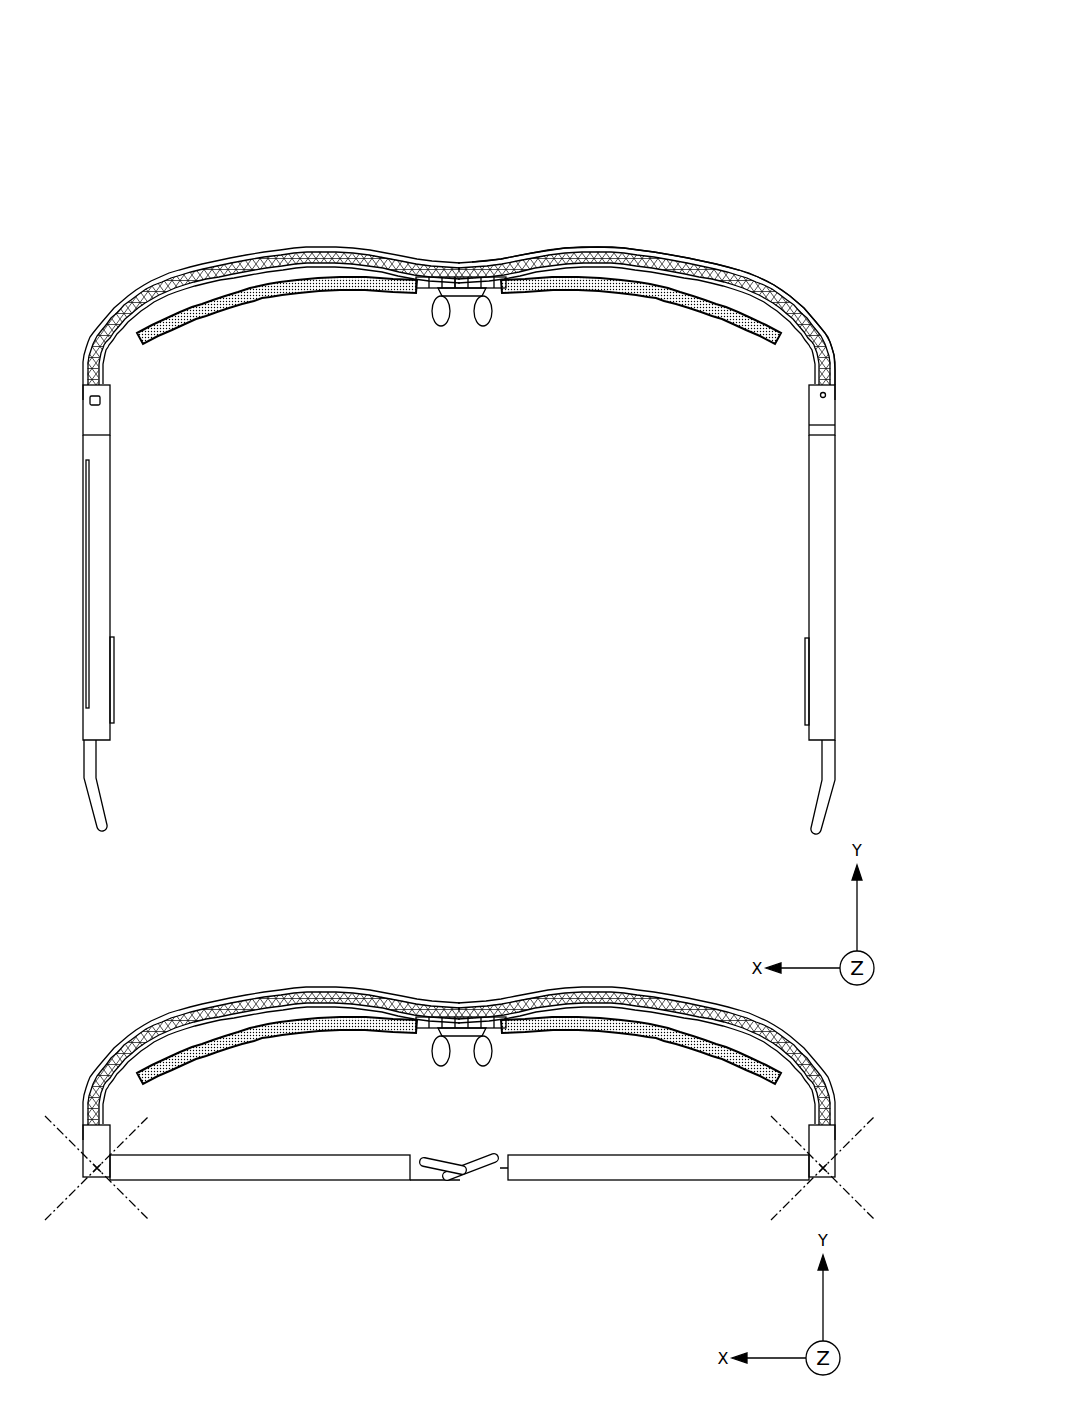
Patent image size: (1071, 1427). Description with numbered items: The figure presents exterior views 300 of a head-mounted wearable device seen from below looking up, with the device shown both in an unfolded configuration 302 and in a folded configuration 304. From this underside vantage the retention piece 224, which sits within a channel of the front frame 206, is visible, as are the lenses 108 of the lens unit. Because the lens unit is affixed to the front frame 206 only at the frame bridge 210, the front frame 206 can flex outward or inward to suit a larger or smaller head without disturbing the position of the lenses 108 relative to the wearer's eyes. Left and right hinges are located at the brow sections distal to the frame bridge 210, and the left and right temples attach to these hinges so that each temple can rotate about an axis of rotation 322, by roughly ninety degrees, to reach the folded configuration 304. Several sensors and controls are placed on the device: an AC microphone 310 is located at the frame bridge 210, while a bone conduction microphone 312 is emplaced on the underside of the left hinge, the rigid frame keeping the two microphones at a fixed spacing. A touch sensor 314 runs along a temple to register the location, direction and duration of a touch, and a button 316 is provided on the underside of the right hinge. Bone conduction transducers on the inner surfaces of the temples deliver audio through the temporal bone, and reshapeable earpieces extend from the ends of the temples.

The exterior views 300 is at (708, 48).
The unfolded configuration 302 is at (250, 88).
The folded configuration 304 is at (233, 965).
The front frame 206 is at (258, 250).
The frame bridge 210 is at (390, 178).
The retention piece 224 is at (621, 248).
The lenses 108 is at (253, 294).
The AC microphone 310 is at (466, 277).
The bone conduction (BC) microphone 312 is at (808, 428).
The touch sensor 314 is at (90, 507).
The button 316 is at (101, 399).
The axis of rotation 322 is at (823, 1168).